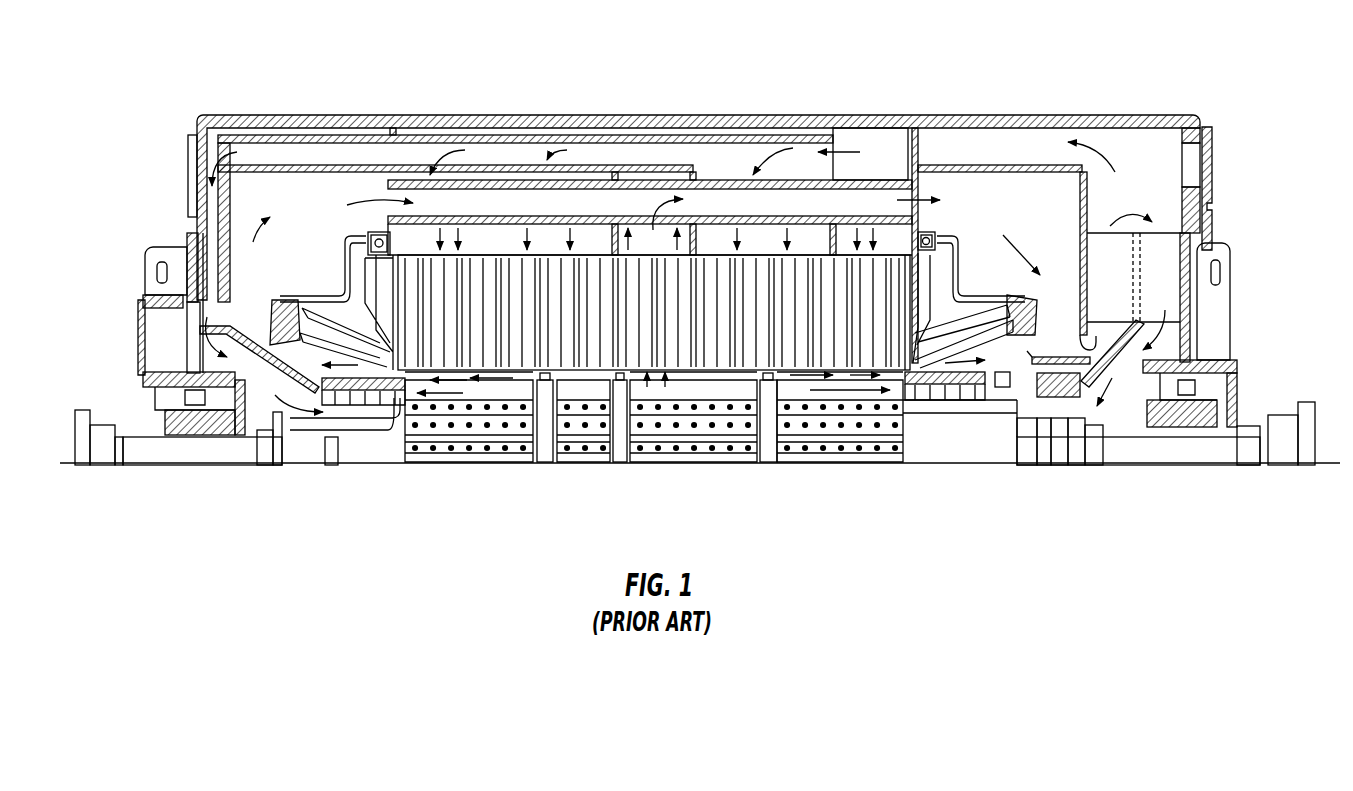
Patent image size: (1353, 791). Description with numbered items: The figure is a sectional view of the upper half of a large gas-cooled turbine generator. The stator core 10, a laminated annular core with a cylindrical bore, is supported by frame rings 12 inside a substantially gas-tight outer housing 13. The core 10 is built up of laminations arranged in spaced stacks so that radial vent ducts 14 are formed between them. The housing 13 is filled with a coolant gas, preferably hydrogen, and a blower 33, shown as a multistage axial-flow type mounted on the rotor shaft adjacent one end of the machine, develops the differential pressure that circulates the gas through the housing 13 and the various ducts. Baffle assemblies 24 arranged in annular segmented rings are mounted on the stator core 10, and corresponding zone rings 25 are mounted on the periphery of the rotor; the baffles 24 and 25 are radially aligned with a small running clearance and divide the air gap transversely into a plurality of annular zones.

The stator core 10 is at (425, 254).
The frame rings 12 is at (477, 243).
The outer housing 13 is at (322, 115).
The radial vent ducts 14 is at (813, 247).
The baffle assemblies 24 is at (537, 373).
The zone rings 25 is at (543, 450).
The blower 33 is at (1037, 377).